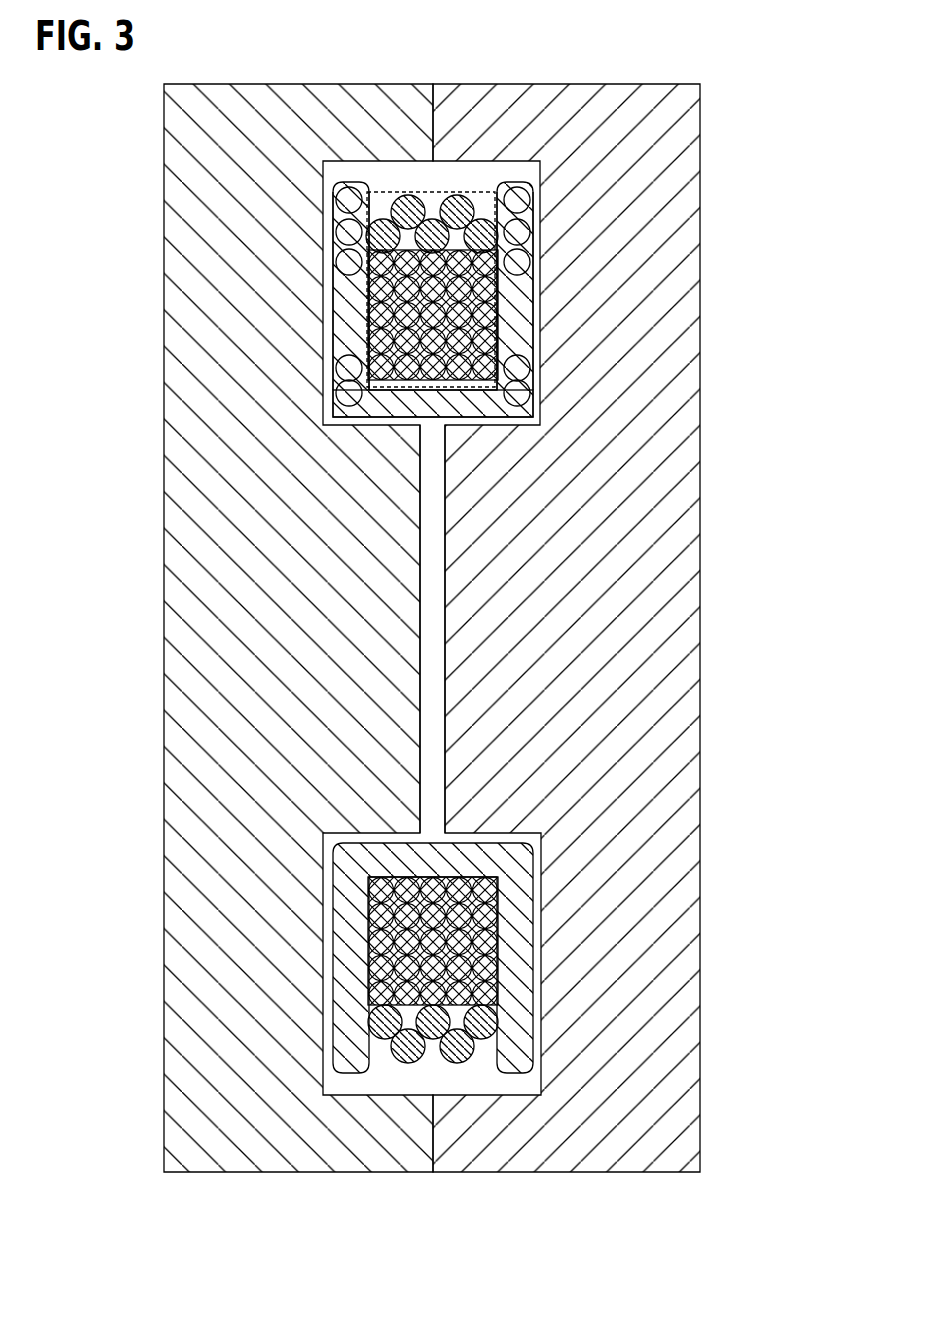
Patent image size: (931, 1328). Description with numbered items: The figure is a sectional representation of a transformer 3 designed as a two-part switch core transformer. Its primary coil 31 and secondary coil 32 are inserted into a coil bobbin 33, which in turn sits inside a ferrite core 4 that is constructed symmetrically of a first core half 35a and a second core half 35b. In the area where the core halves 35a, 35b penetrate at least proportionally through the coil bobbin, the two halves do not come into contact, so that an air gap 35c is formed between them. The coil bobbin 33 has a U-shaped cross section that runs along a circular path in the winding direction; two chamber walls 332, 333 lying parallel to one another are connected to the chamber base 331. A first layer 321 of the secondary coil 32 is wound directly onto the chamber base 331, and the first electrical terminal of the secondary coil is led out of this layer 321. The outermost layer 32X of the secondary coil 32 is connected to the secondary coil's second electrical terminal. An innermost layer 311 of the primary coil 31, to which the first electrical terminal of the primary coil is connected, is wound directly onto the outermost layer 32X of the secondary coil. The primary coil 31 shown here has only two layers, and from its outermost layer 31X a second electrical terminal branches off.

The transformer 3 is at (762, 45).
The ferrite core 4 is at (428, 1190).
The primary coil 31 is at (393, 196).
The outermost layer of primary coil 31X is at (345, 210).
The innermost layer of primary coil 311 is at (350, 232).
The secondary coil 32 is at (362, 325).
The outermost layer of secondary coil 32X is at (342, 255).
The first layer of secondary coil 321 is at (357, 366).
The coil bobbin 33 is at (545, 881).
The chamber base 331 is at (395, 396).
The chamber wall 332 is at (350, 300).
The chamber wall 333 is at (518, 312).
The first core half 35a is at (248, 628).
The second core half 35b is at (620, 668).
The air gap 35c is at (436, 590).